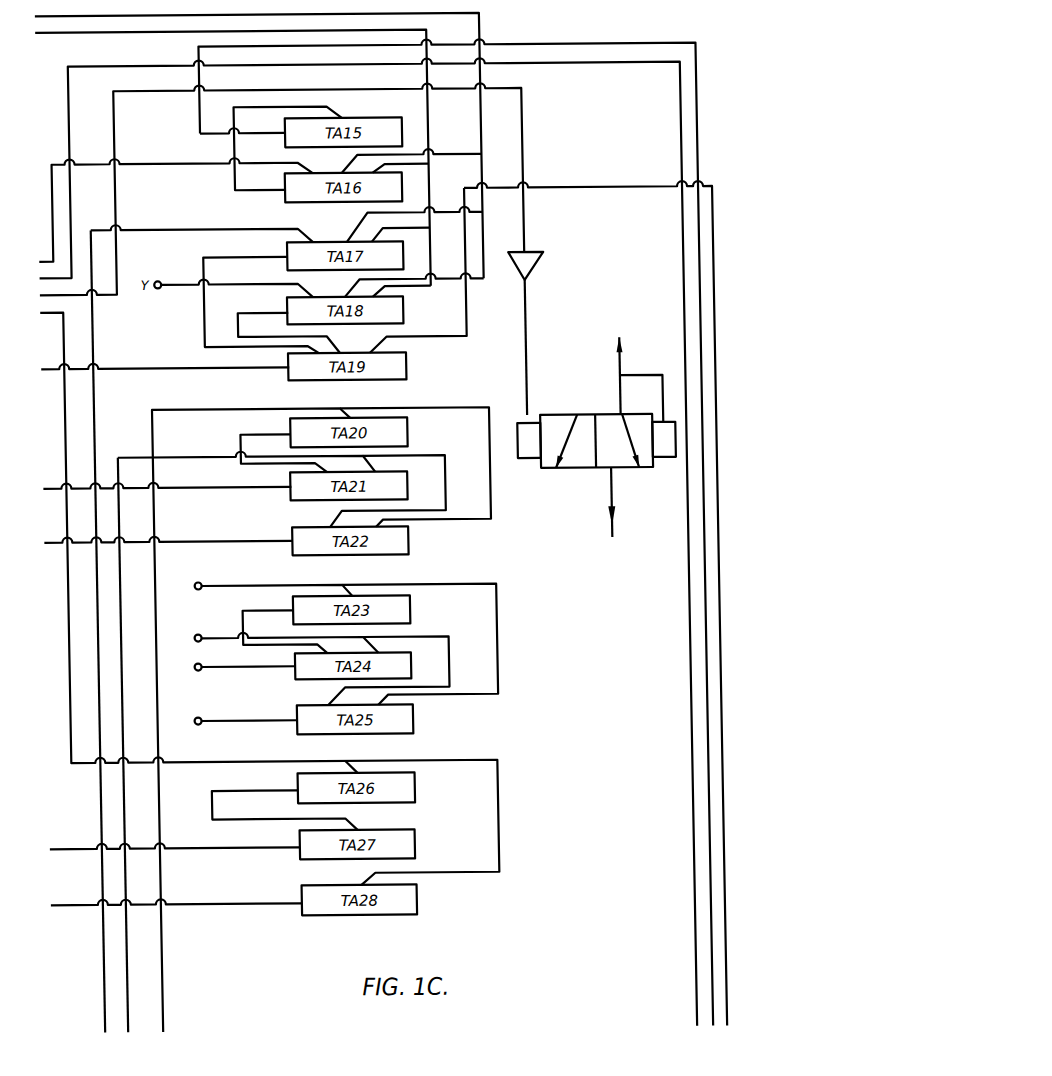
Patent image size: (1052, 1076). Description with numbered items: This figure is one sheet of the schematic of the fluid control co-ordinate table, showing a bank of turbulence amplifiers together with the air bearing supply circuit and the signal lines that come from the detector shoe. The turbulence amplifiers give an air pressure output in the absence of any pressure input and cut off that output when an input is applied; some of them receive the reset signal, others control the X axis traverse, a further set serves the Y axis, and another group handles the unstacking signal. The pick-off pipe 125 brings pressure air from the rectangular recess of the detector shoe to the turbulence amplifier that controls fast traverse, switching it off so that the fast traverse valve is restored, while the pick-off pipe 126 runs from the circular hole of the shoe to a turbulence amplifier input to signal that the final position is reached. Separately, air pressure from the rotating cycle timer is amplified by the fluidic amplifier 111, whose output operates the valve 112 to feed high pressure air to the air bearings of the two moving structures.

The fluidic amplifier 111 is at (533, 264).
The valve 112 is at (579, 426).
The pick-off pipe 125 is at (119, 958).
The pick-off pipe 126 is at (96, 966).